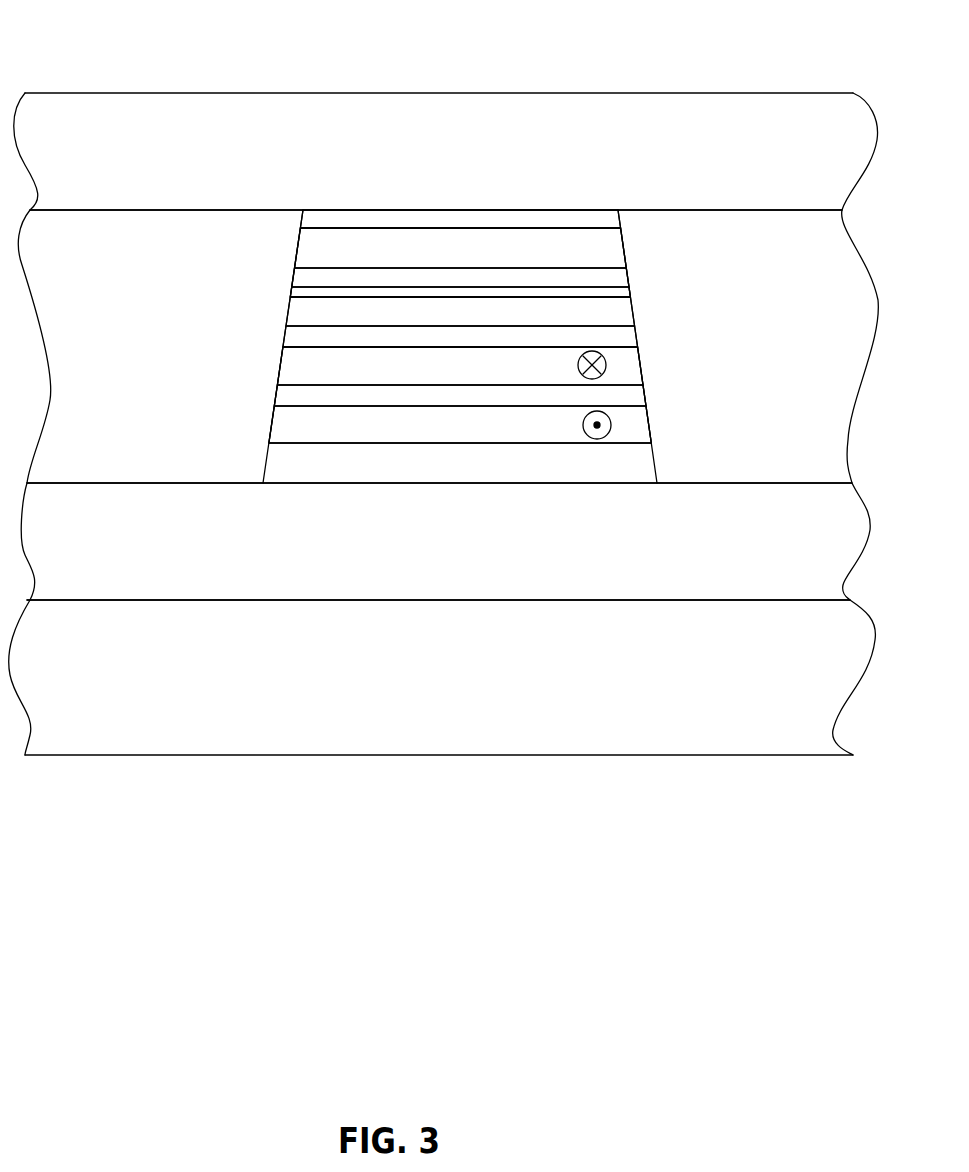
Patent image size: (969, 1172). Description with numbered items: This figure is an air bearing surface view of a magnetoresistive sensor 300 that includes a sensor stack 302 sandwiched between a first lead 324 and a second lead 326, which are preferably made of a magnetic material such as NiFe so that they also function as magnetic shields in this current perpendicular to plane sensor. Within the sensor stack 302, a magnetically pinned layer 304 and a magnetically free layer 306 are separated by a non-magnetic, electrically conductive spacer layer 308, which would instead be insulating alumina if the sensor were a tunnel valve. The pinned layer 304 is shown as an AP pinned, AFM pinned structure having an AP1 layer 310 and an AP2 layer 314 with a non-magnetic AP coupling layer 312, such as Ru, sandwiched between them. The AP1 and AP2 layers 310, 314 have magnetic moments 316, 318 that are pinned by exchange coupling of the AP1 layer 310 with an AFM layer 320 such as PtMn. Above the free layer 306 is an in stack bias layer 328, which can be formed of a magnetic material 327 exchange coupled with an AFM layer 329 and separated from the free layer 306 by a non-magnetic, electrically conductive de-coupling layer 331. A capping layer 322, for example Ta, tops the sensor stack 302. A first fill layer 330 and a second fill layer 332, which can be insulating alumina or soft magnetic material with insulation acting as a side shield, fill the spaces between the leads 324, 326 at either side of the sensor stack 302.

The magnetoresistive sensor 300 is at (551, 52).
The sensor stack 302 is at (277, 327).
The magnetically pinned layer 304 is at (652, 443).
The magnetically free layer 306 is at (543, 311).
The spacer layer 308 is at (588, 335).
The AP1 layer 310 is at (480, 424).
The AP coupling layer 312 is at (298, 397).
The AP2 layer 314 is at (468, 366).
The magnetic moment 316 is at (578, 366).
The magnetic moment 318 is at (584, 424).
The AFM layer 320 is at (552, 514).
The capping layer 322 is at (478, 220).
The first lead 324 is at (552, 662).
The second lead 326 is at (382, 152).
The magnetic material 327 is at (627, 278).
The in stack bias layer 328 is at (292, 297).
The AFM layer 329 is at (461, 248).
The first fill layer 330 is at (829, 303).
The de-coupling layer 331 is at (628, 295).
The second fill layer 332 is at (225, 344).